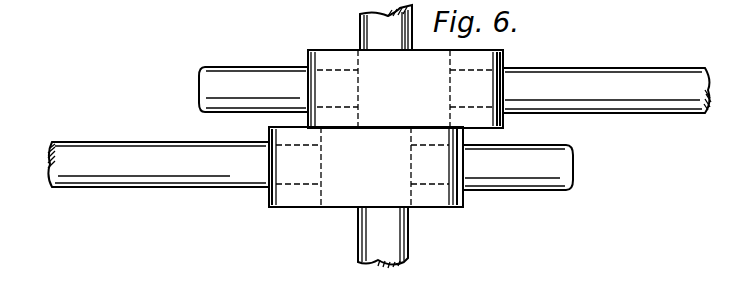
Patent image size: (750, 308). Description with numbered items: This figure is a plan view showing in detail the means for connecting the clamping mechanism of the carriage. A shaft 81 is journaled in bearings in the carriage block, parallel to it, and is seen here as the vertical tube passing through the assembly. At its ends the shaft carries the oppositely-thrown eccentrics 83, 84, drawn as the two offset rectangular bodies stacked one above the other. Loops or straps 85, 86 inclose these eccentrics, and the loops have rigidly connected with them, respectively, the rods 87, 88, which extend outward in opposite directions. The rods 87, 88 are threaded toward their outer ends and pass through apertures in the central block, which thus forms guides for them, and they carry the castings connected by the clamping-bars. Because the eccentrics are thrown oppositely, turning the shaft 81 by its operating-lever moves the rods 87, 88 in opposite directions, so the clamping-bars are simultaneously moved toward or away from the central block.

The shaft 81 is at (409, 223).
The eccentric 83 is at (338, 201).
The eccentric 84 is at (424, 58).
The loop or strap 85 is at (503, 61).
The loop or strap 86 is at (268, 196).
The rod 87 is at (611, 103).
The rod 88 is at (156, 189).